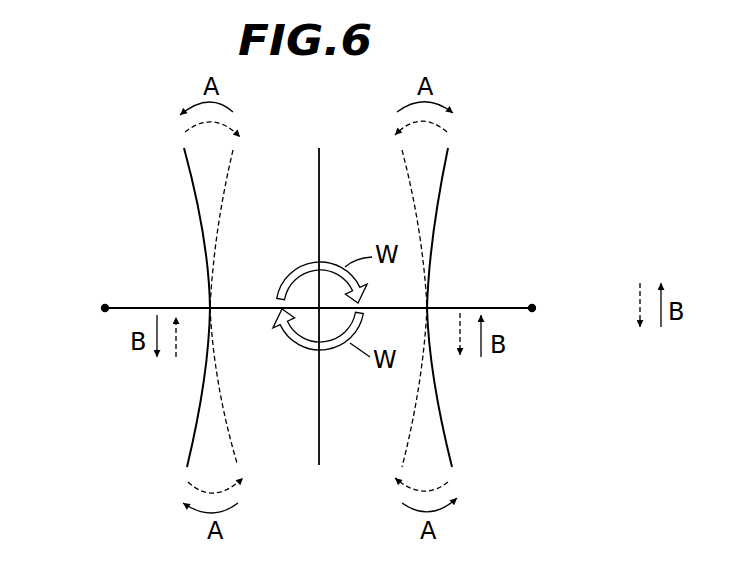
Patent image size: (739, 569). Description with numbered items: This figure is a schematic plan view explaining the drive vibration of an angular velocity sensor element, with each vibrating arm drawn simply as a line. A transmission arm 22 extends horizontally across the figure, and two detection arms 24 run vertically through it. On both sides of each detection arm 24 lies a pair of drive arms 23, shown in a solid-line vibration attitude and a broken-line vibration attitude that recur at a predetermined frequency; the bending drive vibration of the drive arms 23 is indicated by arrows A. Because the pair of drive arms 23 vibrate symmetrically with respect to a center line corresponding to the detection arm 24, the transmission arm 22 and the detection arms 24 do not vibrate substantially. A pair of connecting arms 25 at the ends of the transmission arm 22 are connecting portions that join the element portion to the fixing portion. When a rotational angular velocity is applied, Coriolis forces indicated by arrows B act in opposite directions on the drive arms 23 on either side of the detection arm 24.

The transmission arm 22 is at (477, 307).
The drive arms 23 is at (196, 197).
The detection arms 24 is at (319, 240).
The connecting arms 25 is at (103, 307).